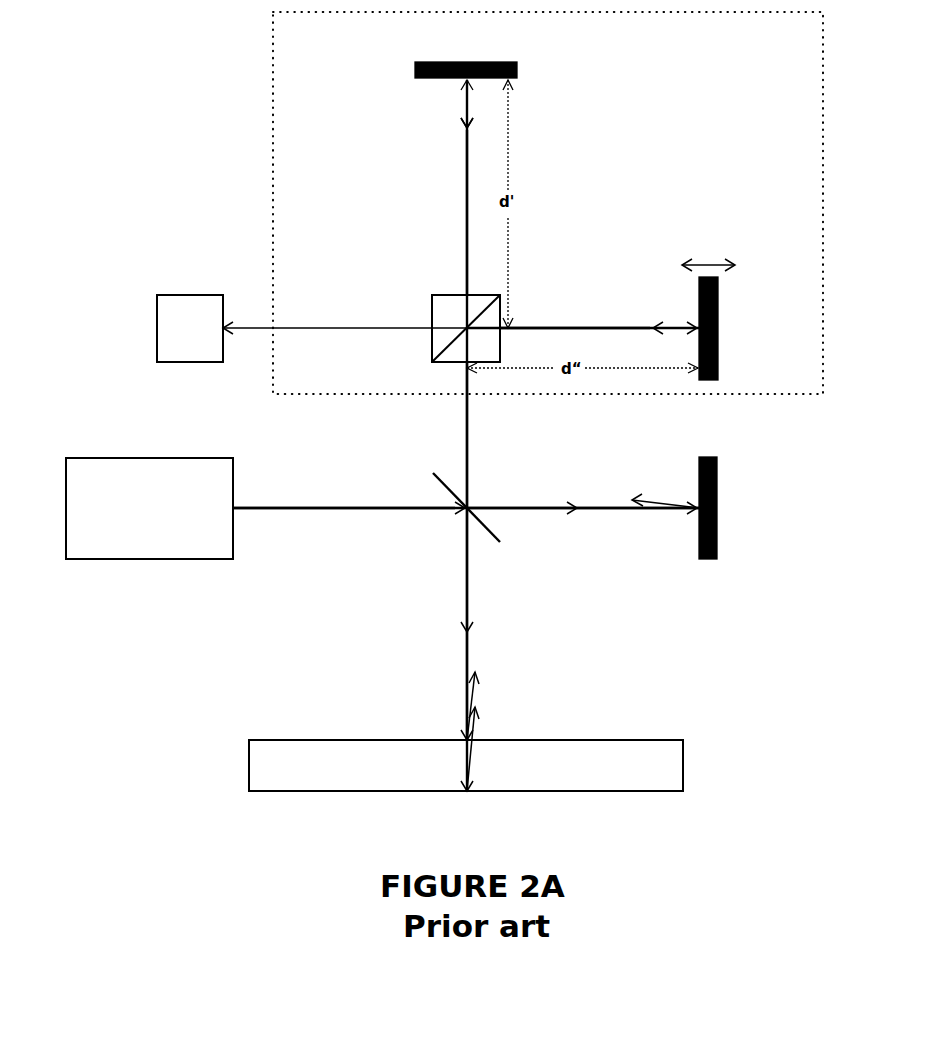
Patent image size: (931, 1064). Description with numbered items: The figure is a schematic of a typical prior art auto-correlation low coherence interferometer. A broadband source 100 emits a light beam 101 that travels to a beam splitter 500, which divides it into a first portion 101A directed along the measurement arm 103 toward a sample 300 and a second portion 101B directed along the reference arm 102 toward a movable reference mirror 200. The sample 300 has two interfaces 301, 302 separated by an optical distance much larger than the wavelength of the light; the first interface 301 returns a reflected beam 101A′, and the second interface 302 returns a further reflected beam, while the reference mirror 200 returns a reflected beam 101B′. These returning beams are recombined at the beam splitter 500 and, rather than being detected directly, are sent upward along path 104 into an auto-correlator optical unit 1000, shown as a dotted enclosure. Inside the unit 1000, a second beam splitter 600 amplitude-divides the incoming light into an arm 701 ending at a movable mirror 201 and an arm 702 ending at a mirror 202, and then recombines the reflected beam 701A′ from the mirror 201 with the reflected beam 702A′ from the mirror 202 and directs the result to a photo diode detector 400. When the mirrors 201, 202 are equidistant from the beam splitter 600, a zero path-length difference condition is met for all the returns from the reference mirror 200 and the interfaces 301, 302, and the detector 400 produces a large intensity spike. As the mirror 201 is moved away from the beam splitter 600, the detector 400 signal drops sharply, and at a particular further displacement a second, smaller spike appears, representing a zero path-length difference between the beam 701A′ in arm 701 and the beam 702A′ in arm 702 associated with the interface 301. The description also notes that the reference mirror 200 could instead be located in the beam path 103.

The auto-correlator optical unit 1000 is at (273, 138).
The mirror 202 is at (508, 60).
The reflected beam 702A′ is at (462, 128).
The arm 702 is at (465, 180).
The beam splitter 600 is at (450, 295).
The arm 701 is at (557, 328).
The reflected beam 701A′ is at (648, 328).
The mirror 201 is at (718, 300).
The detector 400 is at (157, 322).
The broadband source 100 is at (183, 458).
The light beam 101 is at (350, 508).
The beam splitter 500 is at (433, 473).
The beam toward interferometer 104 is at (466, 428).
The reference arm 102 is at (577, 500).
The reflected beam 101B′ is at (632, 496).
The second portion 101B is at (577, 515).
The measurement arm 103 is at (466, 568).
The first portion 101A is at (462, 628).
The reflected beam 101A′ is at (475, 672).
The sample 300 is at (307, 770).
The interface 301 is at (432, 740).
The interface 302 is at (440, 791).
The movable reference mirror 200 is at (717, 457).